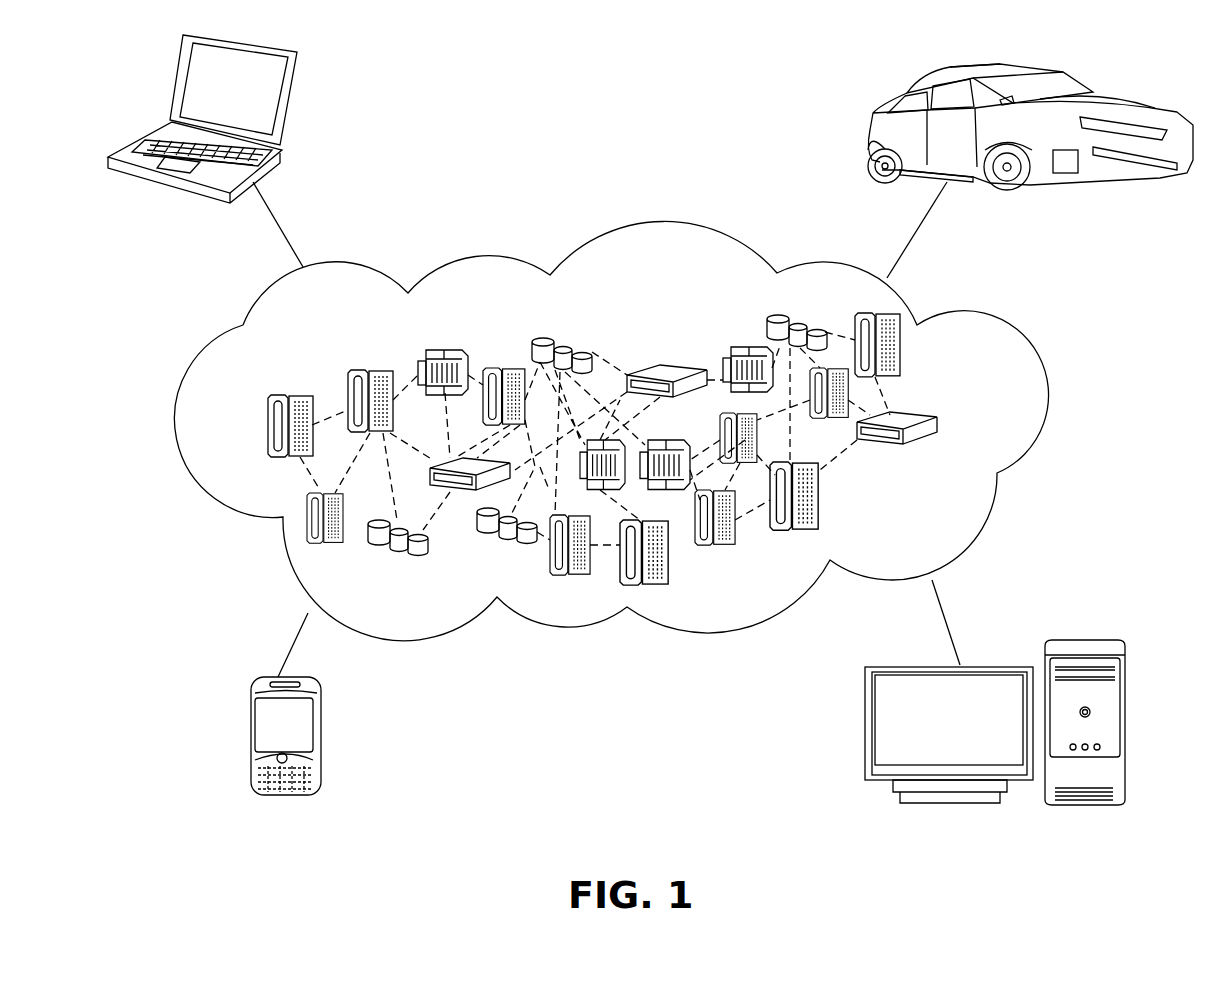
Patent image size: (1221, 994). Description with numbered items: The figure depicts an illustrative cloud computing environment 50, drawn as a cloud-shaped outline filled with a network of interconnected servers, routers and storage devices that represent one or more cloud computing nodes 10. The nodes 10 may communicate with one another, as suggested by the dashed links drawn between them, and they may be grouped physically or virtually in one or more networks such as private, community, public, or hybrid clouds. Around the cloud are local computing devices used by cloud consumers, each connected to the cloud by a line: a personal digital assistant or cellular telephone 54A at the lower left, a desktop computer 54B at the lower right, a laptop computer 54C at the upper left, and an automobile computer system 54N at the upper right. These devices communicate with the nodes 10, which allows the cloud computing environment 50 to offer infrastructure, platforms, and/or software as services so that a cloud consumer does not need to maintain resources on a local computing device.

The cloud computing nodes 10 is at (980, 425).
The cloud computing environment 50 is at (1007, 340).
The personal digital assistant (PDA) or cellular telephone 54A is at (250, 742).
The desktop computer 54B is at (1085, 640).
The laptop computer 54C is at (290, 105).
The automobile computer system 54N is at (873, 113).